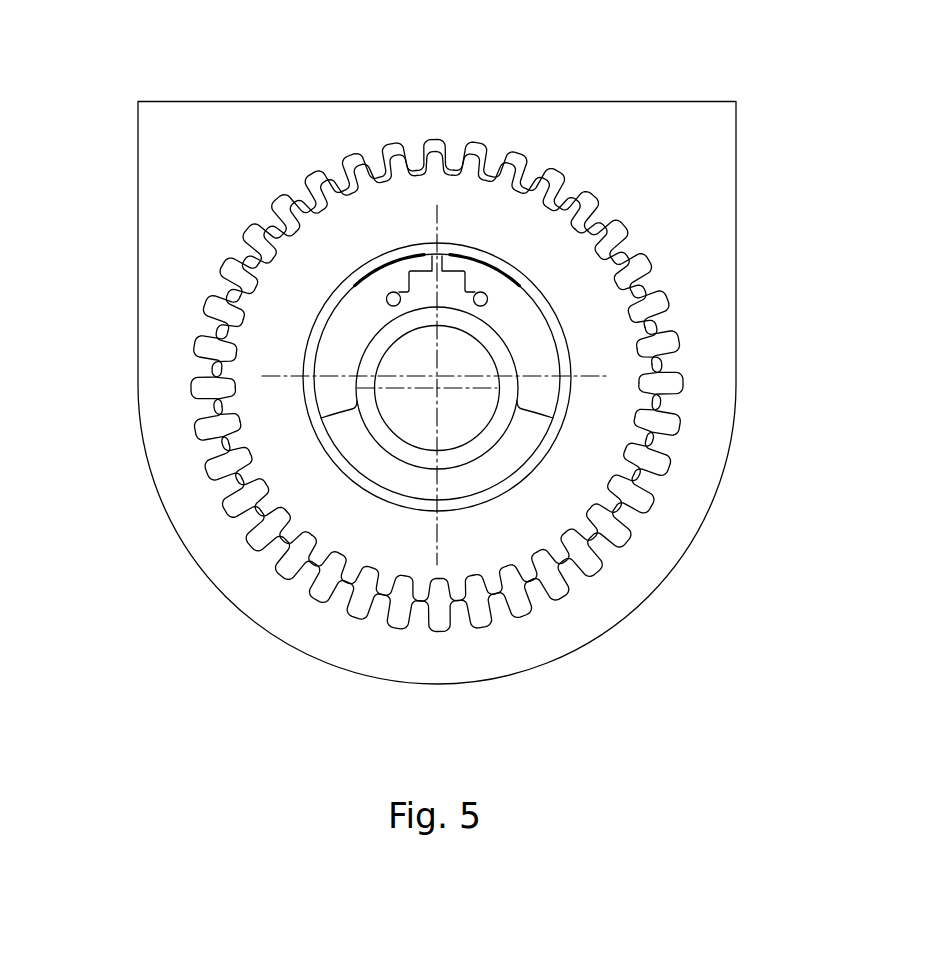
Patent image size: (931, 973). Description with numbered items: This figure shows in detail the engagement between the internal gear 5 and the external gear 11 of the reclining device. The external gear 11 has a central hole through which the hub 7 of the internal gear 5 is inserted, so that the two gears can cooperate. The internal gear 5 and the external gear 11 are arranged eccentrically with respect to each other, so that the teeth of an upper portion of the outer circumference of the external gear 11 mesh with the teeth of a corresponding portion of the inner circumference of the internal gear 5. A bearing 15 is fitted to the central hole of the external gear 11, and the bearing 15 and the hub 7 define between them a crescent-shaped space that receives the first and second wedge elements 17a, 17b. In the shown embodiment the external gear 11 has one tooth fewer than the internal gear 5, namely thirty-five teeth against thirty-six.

The internal gear 5 is at (540, 640).
The hub 7 is at (490, 447).
The external gear 11 is at (663, 403).
The bearing 15 is at (368, 263).
The first wedge element 17a is at (353, 315).
The second wedge element 17b is at (517, 315).